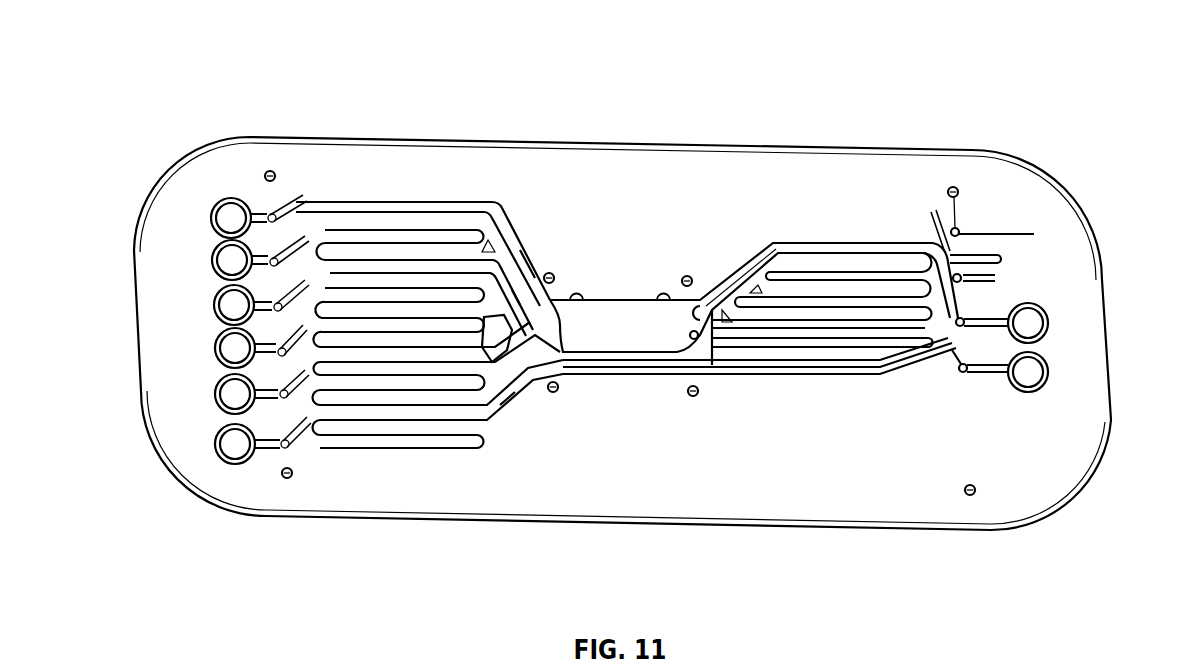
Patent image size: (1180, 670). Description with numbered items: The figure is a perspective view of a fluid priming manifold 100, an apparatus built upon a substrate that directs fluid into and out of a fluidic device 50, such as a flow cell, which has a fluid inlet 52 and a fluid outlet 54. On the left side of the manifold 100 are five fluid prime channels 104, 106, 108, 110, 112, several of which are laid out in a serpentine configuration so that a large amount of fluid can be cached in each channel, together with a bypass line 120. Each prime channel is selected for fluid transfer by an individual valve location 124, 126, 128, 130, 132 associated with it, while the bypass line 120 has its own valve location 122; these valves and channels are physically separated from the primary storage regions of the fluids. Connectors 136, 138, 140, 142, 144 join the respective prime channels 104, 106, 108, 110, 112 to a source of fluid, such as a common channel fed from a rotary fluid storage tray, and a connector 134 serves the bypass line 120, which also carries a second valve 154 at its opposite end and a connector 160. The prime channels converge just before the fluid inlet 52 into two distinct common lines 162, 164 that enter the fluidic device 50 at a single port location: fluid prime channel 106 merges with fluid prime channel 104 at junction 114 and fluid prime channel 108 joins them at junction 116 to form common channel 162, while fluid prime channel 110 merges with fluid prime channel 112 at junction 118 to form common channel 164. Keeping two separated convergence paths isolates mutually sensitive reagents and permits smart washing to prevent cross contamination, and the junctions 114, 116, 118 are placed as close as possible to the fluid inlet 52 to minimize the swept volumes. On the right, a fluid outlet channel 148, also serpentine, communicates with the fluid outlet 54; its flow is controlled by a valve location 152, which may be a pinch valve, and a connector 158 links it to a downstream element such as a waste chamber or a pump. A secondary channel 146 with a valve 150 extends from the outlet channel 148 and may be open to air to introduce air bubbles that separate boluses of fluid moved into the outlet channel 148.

The fluid priming manifold 100 is at (704, 48).
The fluidic device 50 is at (640, 297).
The fluid inlet 52 is at (548, 332).
The fluid outlet 54 is at (708, 355).
The fluid prime channel 104 is at (427, 331).
The fluid prime channel 106 is at (410, 262).
The fluid prime channel 108 is at (358, 420).
The fluid prime channel 110 is at (415, 410).
The fluid prime channel 112 is at (472, 440).
The junction 114 is at (506, 250).
The junction 116 is at (521, 288).
The junction 118 is at (511, 398).
The bypass line 120 is at (341, 204).
The valve location 122 is at (268, 171).
The valve location 124 is at (212, 212).
The valve location 126 is at (270, 304).
The valve location 128 is at (214, 394).
The valve location 130 is at (284, 450).
The valve location 132 is at (290, 479).
The connector 134 is at (228, 196).
The connector 136 is at (213, 257).
The connector 138 is at (215, 302).
The connector 140 is at (216, 347).
The connector 142 is at (214, 405).
The connector 144 is at (226, 462).
The secondary channel 146 is at (813, 243).
The fluid outlet channel 148 is at (852, 272).
The valve 150 is at (956, 187).
The valve location 152 is at (966, 318).
The second valve 154 is at (964, 374).
The connector 158 is at (1049, 321).
The connector 160 is at (1049, 372).
The common line 162 is at (556, 279).
The common line 164 is at (527, 377).